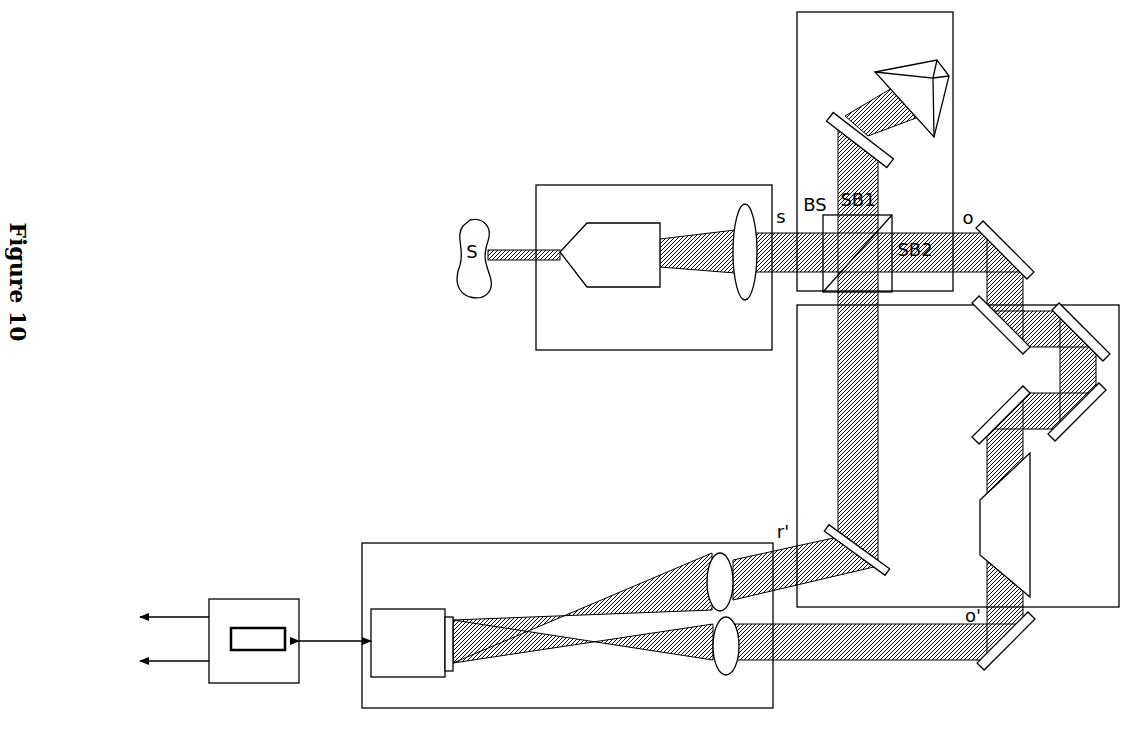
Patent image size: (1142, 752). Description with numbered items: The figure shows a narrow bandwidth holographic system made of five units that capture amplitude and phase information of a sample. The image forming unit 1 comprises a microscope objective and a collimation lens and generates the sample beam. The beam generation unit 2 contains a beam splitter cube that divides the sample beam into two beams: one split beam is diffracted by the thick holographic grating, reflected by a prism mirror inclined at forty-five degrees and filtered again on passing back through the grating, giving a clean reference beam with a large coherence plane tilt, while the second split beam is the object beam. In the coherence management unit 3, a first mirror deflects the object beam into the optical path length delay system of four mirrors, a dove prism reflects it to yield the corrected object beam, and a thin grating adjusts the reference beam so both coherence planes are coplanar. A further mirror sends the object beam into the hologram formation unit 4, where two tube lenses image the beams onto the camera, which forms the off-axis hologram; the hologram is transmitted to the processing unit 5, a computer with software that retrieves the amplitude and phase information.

The image forming unit 1 is at (654, 267).
The beam generation unit 2 is at (875, 151).
The coherence plane management unit 3 is at (959, 445).
The hologram formation unit 4 is at (567, 625).
The processing unit 5 is at (244, 604).